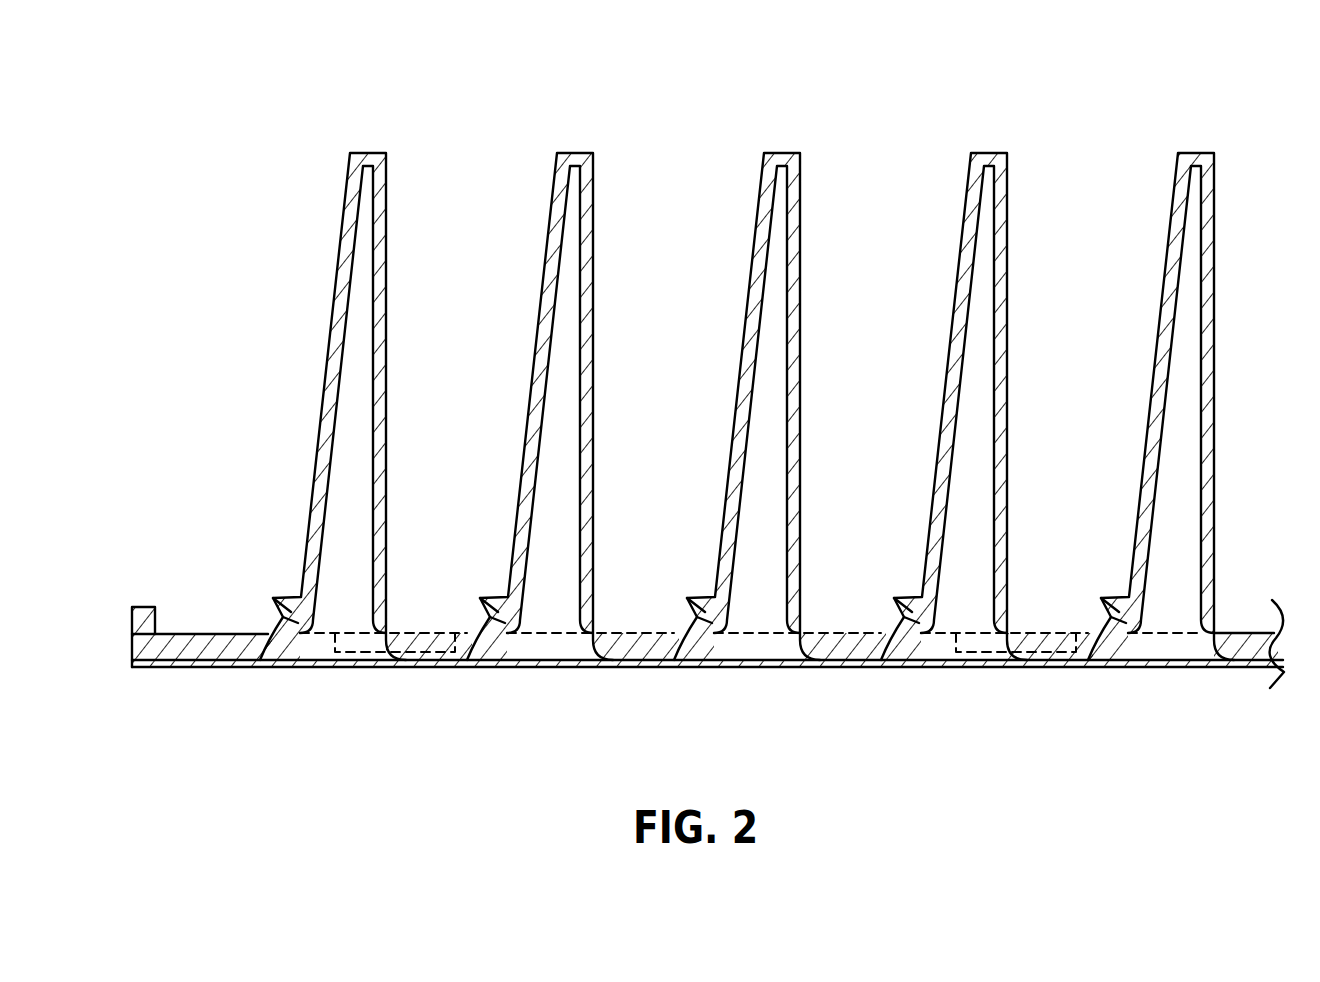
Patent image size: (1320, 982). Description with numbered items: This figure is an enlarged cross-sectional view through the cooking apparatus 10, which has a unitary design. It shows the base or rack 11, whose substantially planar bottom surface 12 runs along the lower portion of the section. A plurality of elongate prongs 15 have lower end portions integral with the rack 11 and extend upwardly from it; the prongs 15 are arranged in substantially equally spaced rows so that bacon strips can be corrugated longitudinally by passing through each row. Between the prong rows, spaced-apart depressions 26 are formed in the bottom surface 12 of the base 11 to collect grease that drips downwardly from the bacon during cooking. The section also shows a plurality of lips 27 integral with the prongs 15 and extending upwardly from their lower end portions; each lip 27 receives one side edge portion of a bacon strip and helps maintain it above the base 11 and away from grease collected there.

The cooking apparatus 10 is at (750, 90).
The base or rack 11 is at (147, 607).
The bottom surface 12 is at (745, 668).
The elongate prong 15 is at (1278, 162).
The depression 26 is at (979, 645).
The lip 27 is at (1116, 600).